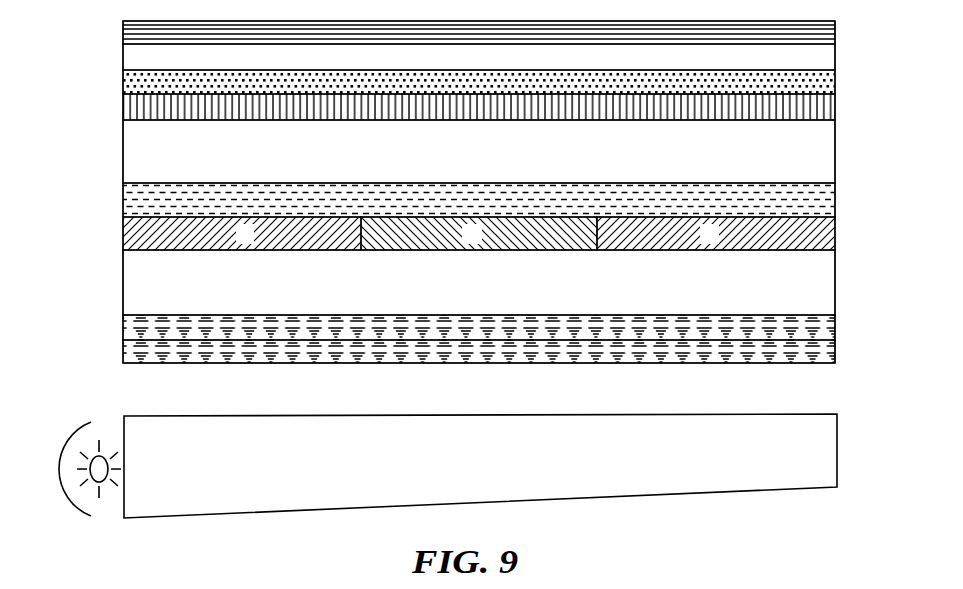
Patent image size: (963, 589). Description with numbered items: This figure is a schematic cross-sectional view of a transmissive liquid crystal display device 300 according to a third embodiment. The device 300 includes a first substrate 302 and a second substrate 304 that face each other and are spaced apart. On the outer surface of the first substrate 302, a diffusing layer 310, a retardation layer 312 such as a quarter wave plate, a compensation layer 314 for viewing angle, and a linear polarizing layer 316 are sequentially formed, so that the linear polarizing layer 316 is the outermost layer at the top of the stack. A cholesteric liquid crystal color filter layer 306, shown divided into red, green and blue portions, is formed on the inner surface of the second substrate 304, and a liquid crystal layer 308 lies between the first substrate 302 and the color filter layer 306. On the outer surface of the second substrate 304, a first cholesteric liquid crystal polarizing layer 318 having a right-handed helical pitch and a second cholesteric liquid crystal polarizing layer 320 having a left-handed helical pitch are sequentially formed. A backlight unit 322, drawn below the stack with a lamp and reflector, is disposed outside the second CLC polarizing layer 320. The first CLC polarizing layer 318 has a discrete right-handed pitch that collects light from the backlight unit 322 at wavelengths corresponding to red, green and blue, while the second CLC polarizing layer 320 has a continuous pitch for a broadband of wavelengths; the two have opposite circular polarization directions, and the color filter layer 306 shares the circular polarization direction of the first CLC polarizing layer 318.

The transmissive liquid crystal display device 300 is at (124, 518).
The first substrate 302 is at (838, 150).
The second substrate 304 is at (838, 283).
The cholesteric liquid crystal color filter layer 306 is at (838, 232).
The liquid crystal layer 308 is at (838, 197).
The diffusing layer 310 is at (838, 105).
The retardation layer 312 is at (838, 77).
The compensation layer 314 is at (838, 48).
The linear polarizing layer 316 is at (838, 30).
The first cholesteric liquid crystal polarizing layer 318 is at (838, 320).
The second cholesteric liquid crystal polarizing layer 320 is at (838, 349).
The backlight unit 322 is at (838, 457).